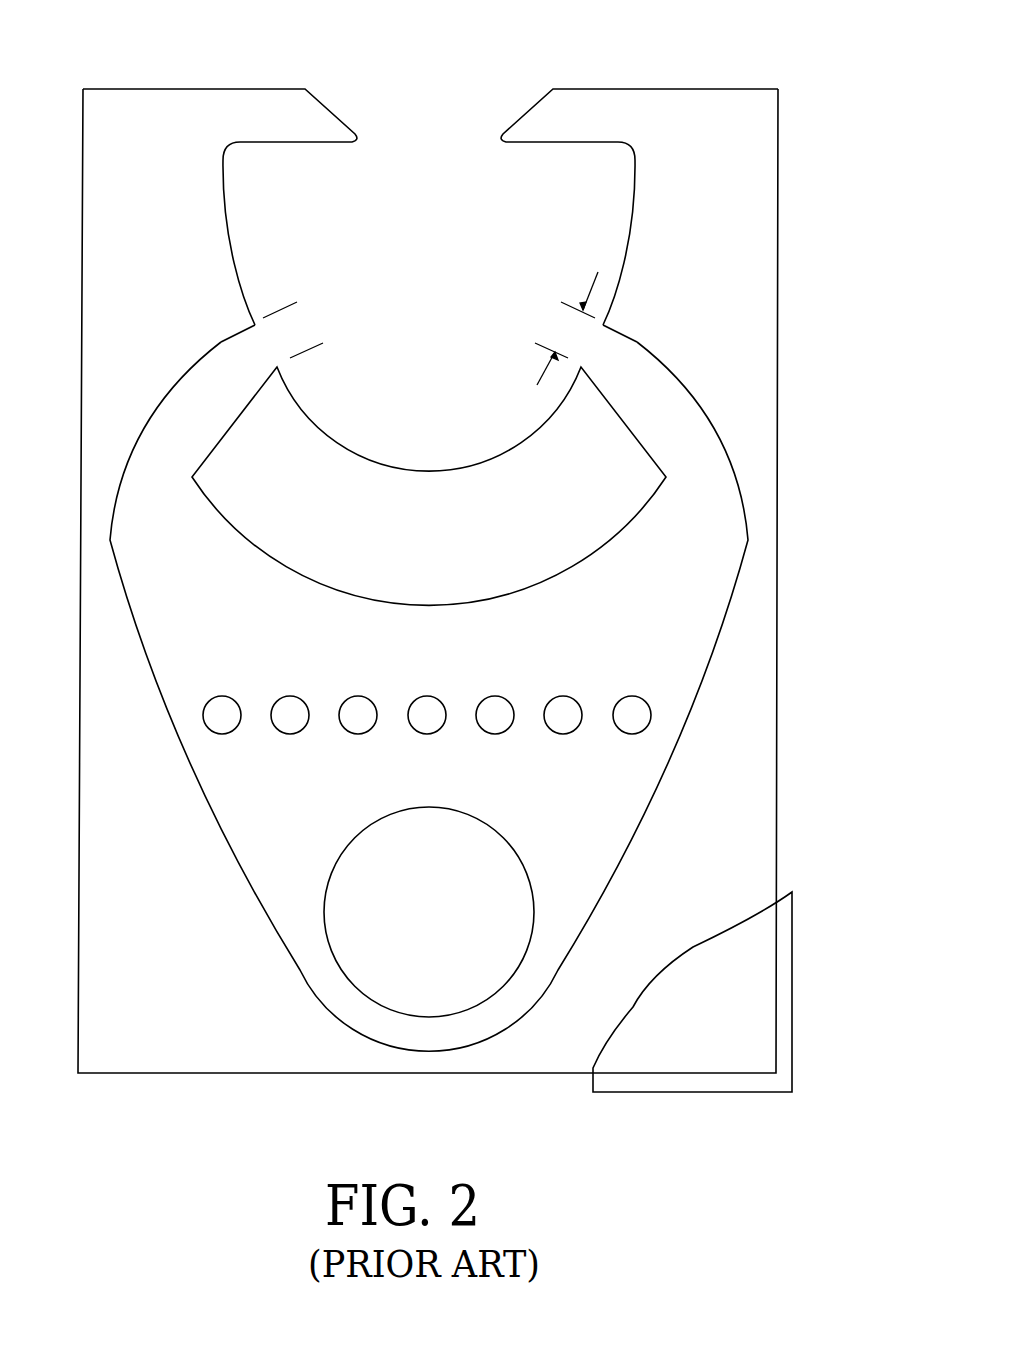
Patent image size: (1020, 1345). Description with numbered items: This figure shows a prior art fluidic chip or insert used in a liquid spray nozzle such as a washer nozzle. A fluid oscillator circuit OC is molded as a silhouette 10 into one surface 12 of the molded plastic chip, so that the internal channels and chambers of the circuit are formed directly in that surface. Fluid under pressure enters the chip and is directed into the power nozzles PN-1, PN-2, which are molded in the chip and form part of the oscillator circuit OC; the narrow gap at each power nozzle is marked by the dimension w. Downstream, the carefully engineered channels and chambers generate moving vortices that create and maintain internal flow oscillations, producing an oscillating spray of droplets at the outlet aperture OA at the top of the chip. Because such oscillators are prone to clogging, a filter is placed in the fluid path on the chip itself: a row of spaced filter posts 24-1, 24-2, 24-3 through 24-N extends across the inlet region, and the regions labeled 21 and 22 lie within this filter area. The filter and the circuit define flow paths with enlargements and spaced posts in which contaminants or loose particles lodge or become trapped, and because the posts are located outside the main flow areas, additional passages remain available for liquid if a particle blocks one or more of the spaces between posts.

The silhouette 10 is at (630, 217).
The surface 12 is at (765, 265).
The cavity 21 is at (308, 808).
The hole 22 is at (447, 931).
The filter post 24-1 is at (215, 696).
The filter post 24-2 is at (287, 696).
The filter post 24-3 is at (357, 696).
The filter post 24-N is at (632, 696).
The outlet aperture OA is at (432, 130).
The fluid oscillator circuit OC is at (443, 245).
The power nozzle PN-1 is at (262, 350).
The power nozzle PN-2 is at (594, 350).
The gap width w is at (430, 328).